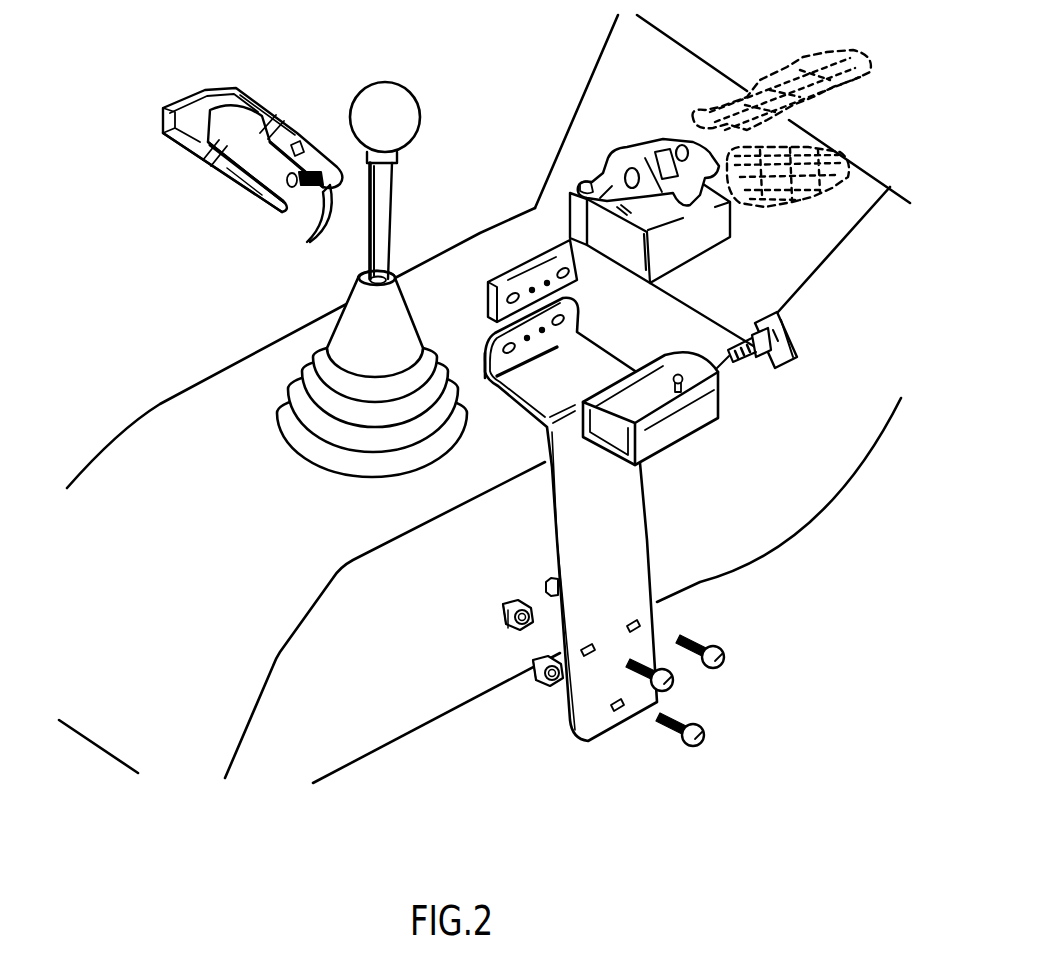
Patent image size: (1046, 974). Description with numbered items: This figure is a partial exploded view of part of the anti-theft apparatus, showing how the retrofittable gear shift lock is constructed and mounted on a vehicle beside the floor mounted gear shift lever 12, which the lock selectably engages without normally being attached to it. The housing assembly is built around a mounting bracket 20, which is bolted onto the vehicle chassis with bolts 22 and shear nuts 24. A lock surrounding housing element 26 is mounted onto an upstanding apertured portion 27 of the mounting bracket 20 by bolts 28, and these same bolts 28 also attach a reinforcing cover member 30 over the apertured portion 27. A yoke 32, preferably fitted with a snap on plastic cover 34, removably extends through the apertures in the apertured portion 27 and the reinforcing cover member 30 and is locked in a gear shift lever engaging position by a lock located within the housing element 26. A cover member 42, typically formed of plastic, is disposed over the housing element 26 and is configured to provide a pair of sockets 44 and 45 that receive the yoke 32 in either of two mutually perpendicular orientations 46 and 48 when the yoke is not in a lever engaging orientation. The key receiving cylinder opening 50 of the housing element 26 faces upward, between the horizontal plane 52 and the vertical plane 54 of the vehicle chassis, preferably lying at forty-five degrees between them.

The gear shift lever 12 is at (385, 180).
The mounting bracket 20 is at (642, 580).
The bolts 22 is at (720, 668).
The shear nuts 24 is at (540, 678).
The lock surrounding housing element 26 is at (672, 435).
The upstanding apertured portion 27 is at (492, 360).
The bolts 28 is at (312, 222).
The reinforcing cover member 30 is at (517, 270).
The yoke 32 is at (235, 172).
The snap on plastic cover 34 is at (208, 95).
The cover member 42 is at (690, 240).
The socket 44 is at (597, 201).
The socket 45 is at (684, 147).
The yoke orientation 46 is at (820, 53).
The yoke orientation 48 is at (848, 165).
The key receiving cylinder opening 50 is at (720, 374).
The plane 52 is at (487, 478).
The plane 54 is at (435, 572).